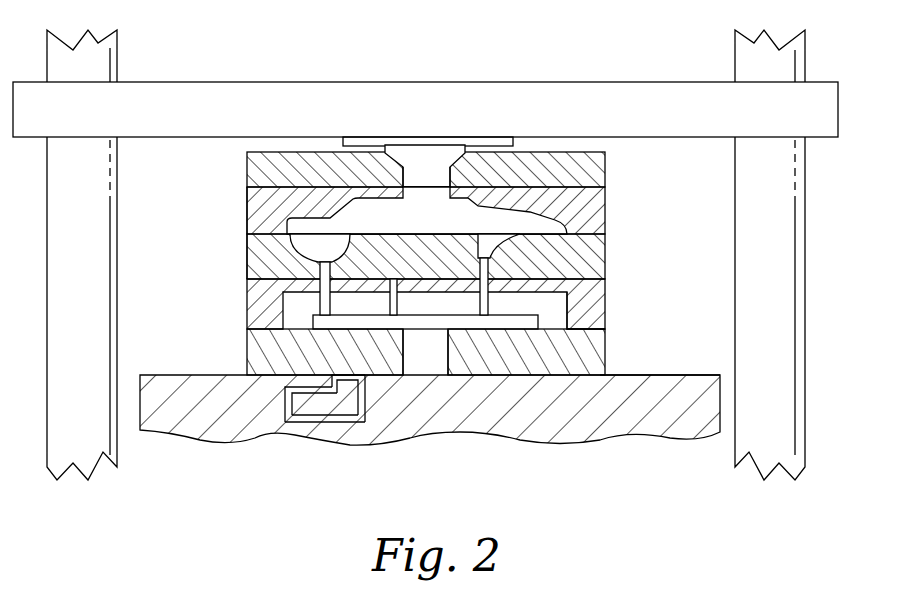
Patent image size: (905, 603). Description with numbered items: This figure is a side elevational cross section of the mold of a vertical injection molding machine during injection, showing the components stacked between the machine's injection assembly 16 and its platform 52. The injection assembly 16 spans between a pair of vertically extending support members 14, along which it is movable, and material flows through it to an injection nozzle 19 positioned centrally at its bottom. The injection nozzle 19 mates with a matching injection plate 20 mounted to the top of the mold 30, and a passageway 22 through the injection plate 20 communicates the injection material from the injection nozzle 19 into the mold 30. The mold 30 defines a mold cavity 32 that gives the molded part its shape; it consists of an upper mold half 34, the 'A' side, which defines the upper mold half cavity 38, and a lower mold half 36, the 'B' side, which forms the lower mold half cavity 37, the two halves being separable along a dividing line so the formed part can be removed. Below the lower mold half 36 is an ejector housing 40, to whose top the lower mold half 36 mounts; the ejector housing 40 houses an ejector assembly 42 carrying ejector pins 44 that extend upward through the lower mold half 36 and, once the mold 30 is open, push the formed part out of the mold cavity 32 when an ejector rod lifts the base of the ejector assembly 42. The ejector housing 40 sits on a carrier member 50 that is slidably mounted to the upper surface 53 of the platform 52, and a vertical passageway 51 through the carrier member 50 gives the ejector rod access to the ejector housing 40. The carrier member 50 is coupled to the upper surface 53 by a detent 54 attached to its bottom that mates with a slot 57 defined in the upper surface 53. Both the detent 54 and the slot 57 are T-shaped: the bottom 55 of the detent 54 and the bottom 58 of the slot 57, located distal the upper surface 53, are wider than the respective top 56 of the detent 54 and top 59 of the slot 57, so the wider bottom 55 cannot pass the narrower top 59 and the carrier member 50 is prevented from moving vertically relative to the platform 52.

The support members 14 is at (118, 53).
The injection assembly 16 is at (263, 81).
The injection nozzle 19 is at (398, 162).
The injection plate 20 is at (435, 262).
The passageway 22 is at (430, 176).
The mold 30 is at (247, 240).
The mold cavity 32 is at (355, 217).
The upper mold half 34 is at (605, 213).
The lower mold half 36 is at (605, 264).
The lower mold half cavity 37 is at (482, 247).
The upper mold half cavity 38 is at (548, 178).
The ejector housing 40 is at (605, 309).
The ejector assembly 42 is at (262, 318).
The ejector pins 44 is at (256, 293).
The carrier member 50 is at (605, 361).
The vertical passageway 51 is at (425, 352).
The platform 52 is at (655, 427).
The upper surface 53 is at (700, 375).
The detent 54 is at (340, 402).
The bottom of the detent 55 is at (345, 405).
The top of the detent 56 is at (287, 388).
The slot 57 is at (292, 408).
The bottom of the slot 58 is at (308, 420).
The top of the slot 59 is at (352, 380).